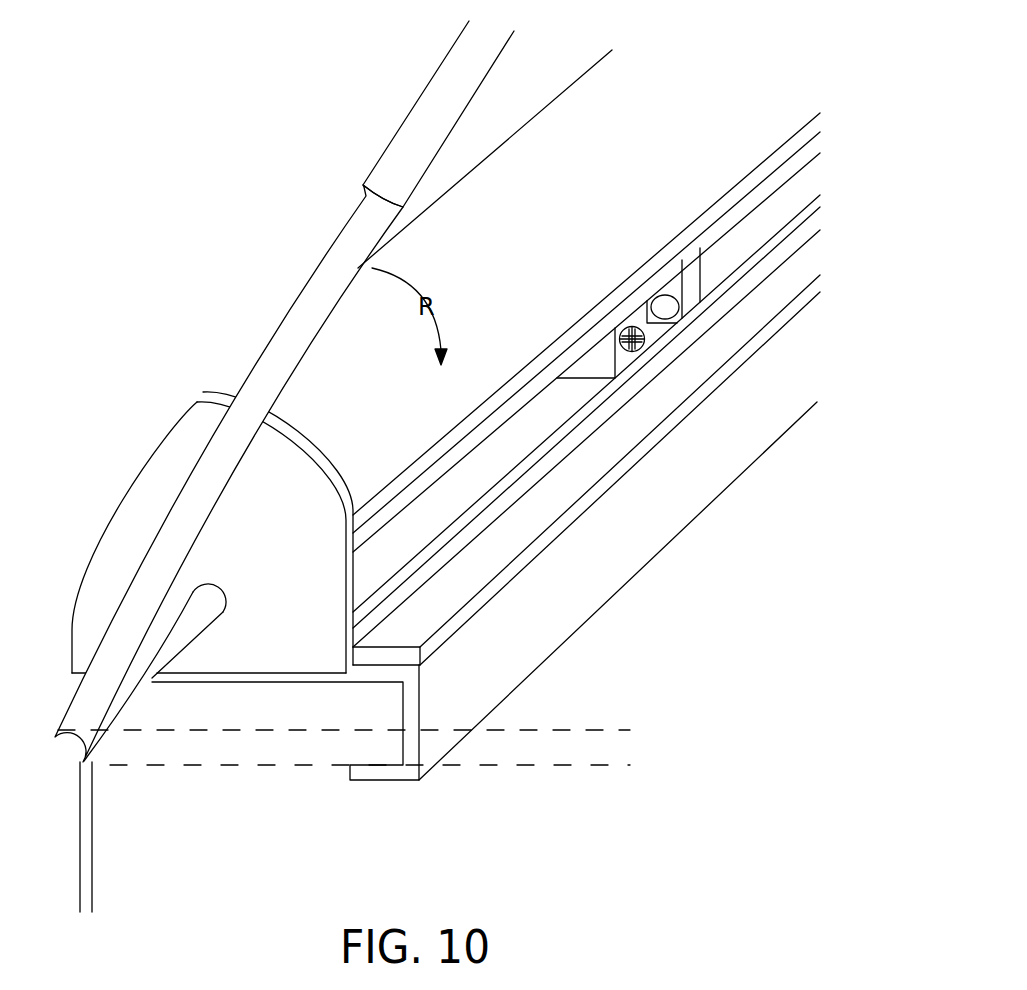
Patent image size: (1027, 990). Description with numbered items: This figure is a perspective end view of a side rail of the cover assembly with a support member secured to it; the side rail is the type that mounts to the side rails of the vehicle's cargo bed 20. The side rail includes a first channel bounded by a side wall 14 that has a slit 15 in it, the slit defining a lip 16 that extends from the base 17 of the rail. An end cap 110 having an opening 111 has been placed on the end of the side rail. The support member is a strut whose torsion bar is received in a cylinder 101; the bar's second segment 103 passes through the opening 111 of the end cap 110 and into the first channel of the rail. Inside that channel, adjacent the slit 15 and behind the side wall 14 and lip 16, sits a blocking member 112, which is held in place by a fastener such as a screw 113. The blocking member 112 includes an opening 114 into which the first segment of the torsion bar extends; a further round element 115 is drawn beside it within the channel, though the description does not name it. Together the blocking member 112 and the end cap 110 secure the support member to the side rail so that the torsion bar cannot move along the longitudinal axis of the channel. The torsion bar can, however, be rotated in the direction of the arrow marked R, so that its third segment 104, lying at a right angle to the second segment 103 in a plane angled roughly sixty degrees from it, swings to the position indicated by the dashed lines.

The side wall 14 is at (380, 522).
The slit 15 is at (480, 483).
The lip 16 is at (405, 590).
The base 17 is at (453, 630).
The cargo bed 20 is at (76, 825).
The cylinder 101 is at (452, 72).
The second segment 103 is at (137, 682).
The third segment 104 is at (318, 283).
The end cap 110 is at (170, 470).
The opening 111 is at (215, 622).
The blocking member 112 is at (633, 318).
The screw 113 is at (620, 332).
The opening 114 is at (673, 278).
The roller 115 is at (667, 321).